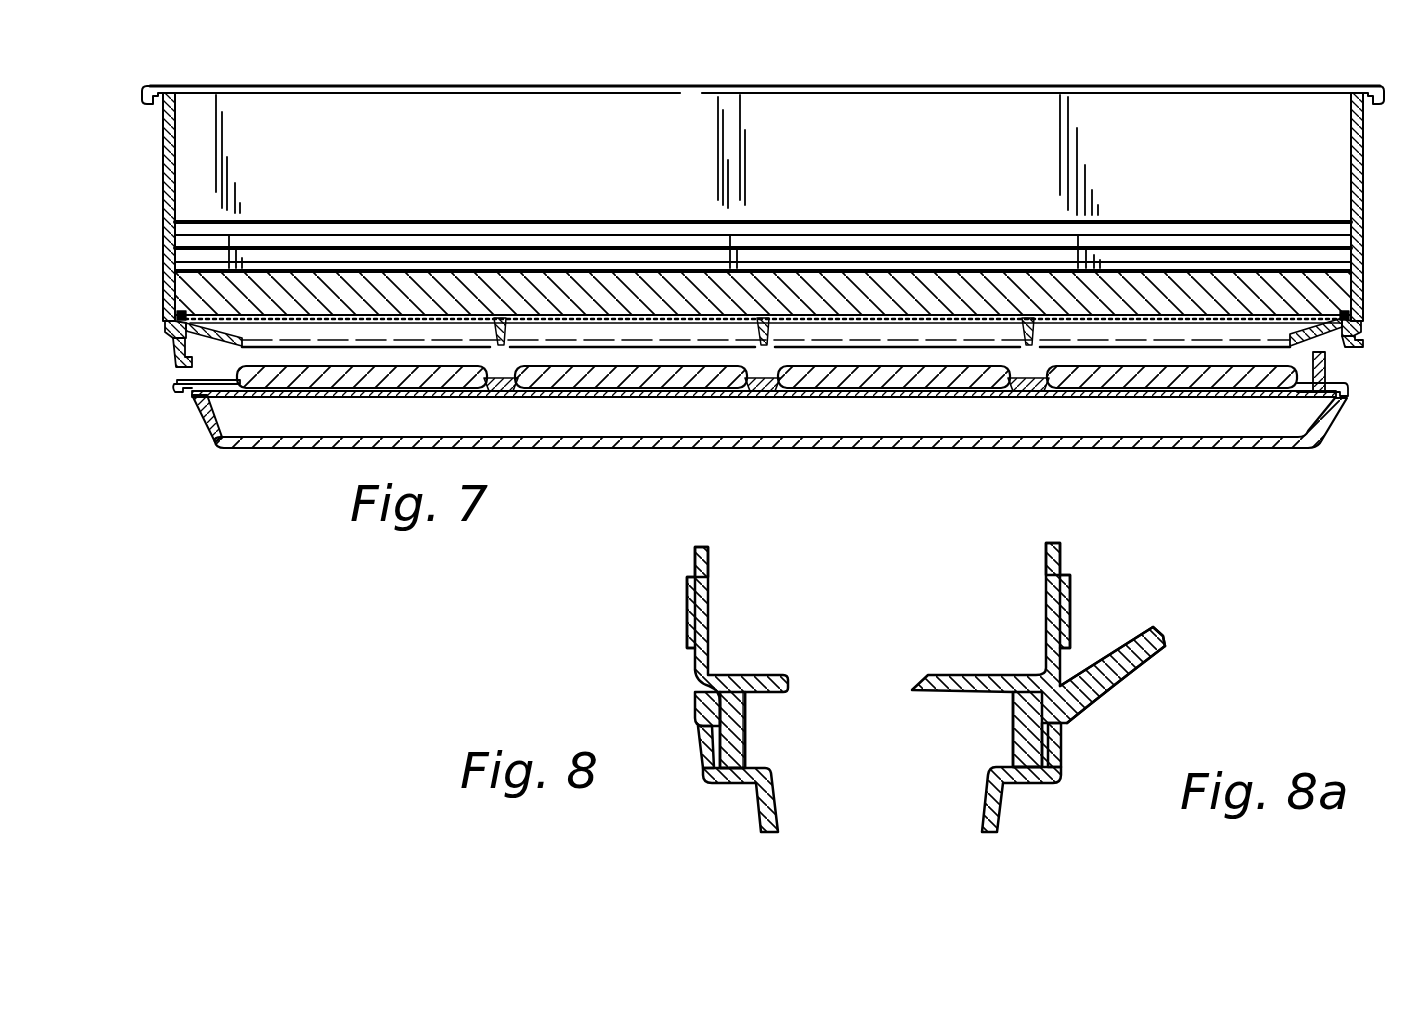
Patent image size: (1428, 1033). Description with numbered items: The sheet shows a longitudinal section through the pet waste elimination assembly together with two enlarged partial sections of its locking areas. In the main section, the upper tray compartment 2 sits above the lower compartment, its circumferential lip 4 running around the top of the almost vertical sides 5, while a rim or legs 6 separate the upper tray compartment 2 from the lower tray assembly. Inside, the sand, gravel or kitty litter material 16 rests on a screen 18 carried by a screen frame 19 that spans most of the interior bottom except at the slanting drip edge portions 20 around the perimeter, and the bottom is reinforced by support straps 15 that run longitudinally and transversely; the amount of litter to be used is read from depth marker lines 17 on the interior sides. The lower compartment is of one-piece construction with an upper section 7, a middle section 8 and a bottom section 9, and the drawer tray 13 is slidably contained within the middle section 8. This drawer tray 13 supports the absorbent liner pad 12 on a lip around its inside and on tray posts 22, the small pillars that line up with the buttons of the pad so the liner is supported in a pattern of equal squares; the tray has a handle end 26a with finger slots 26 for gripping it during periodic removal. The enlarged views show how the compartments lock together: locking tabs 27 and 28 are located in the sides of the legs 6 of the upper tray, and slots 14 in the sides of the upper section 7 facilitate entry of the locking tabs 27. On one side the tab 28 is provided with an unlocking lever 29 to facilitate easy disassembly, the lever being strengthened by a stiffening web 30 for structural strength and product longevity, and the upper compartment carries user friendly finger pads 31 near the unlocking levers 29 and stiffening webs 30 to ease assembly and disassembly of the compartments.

In FIG. 7, the upper tray compartment 2 is at (540, 100).
In FIG. 8, the upper tray compartment 2 is at (710, 597).
In FIG. 8A, the upper tray compartment 2 is at (1046, 585).
In FIG. 7, the circumferential lip 4 is at (165, 86).
In FIG. 8, the sides 5 is at (706, 553).
In FIG. 8A, the sides 5 is at (1060, 553).
In FIG. 7, the legs 6 is at (172, 332).
In FIG. 8, the legs 6 is at (743, 712).
In FIG. 8A, the legs 6 is at (1015, 716).
In FIG. 7, the upper section 7 is at (175, 354).
In FIG. 8, the upper section 7 is at (758, 802).
In FIG. 8A, the upper section 7 is at (1000, 806).
In FIG. 7, the middle section 8 is at (1346, 385).
In FIG. 7, the bottom section 9 is at (1330, 426).
In FIG. 7, the liner pad 12 is at (360, 388).
In FIG. 7, the drawer tray 13 is at (178, 382).
In FIG. 8, the slots 14 is at (702, 745).
In FIG. 8A, the slots 14 is at (1062, 745).
In FIG. 7, the support straps 15 is at (499, 322).
In FIG. 7, the litter material 16 is at (455, 285).
In FIG. 7, the depth marker lines 17 is at (818, 95).
In FIG. 7, the screen 18 is at (625, 318).
In FIG. 7, the screen frame 19 is at (183, 326).
In FIG. 7, the slanting drip edge portions 20 is at (238, 340).
In FIG. 7, the tray posts 22 is at (516, 392).
In FIG. 7, the finger slots 26 is at (194, 398).
In FIG. 7, the handle end 26a is at (178, 393).
In FIG. 8, the locking tab 27 is at (700, 722).
In FIG. 8, the locking tab 28 is at (743, 732).
In FIG. 8A, the locking tab 28 is at (1040, 742).
In FIG. 8A, the unlocking lever 29 is at (1162, 635).
In FIG. 8A, the stiffening web 30 is at (1115, 688).
In FIG. 8, the finger pads 31 is at (690, 607).
In FIG. 8A, the finger pads 31 is at (1070, 592).